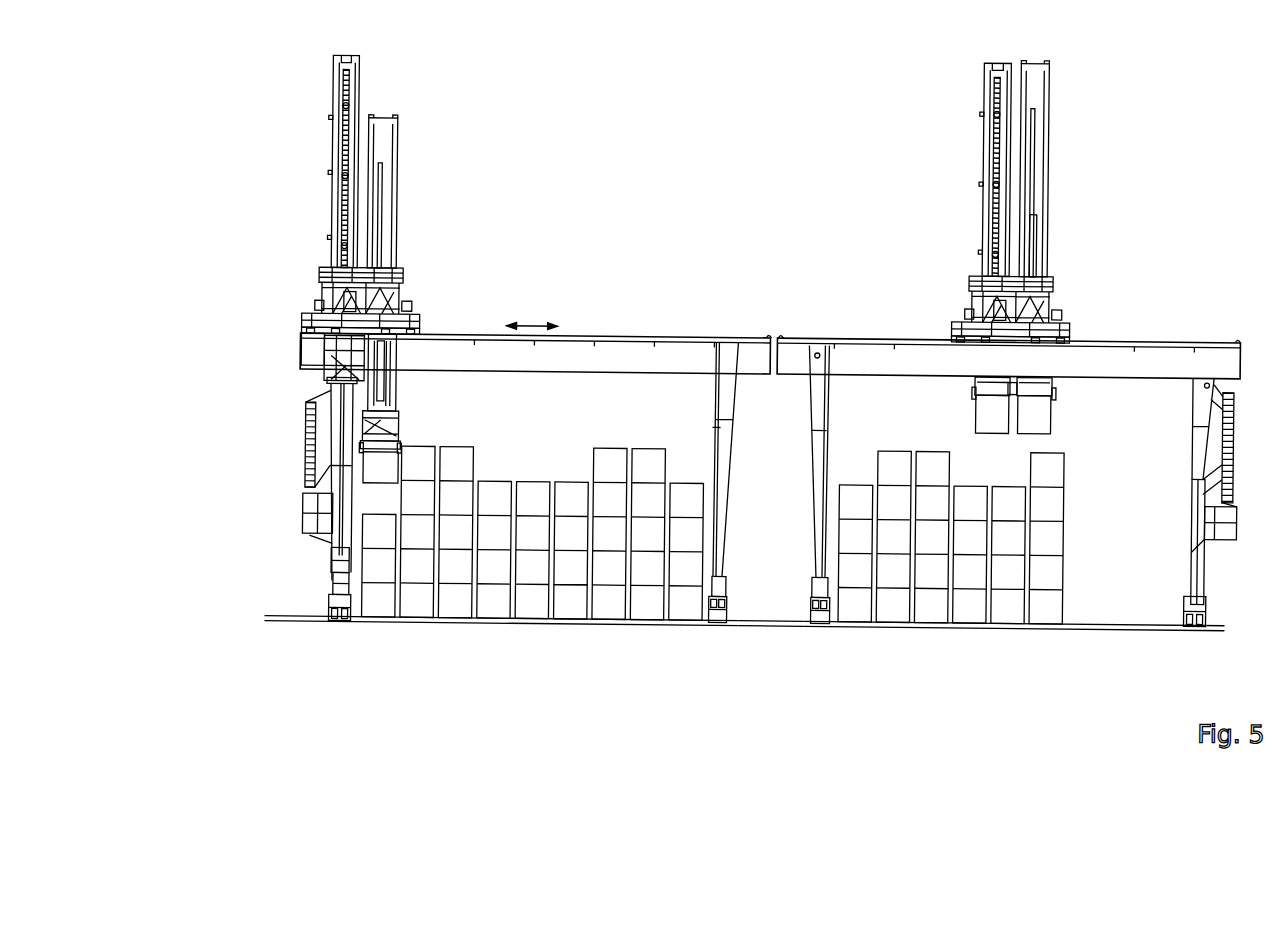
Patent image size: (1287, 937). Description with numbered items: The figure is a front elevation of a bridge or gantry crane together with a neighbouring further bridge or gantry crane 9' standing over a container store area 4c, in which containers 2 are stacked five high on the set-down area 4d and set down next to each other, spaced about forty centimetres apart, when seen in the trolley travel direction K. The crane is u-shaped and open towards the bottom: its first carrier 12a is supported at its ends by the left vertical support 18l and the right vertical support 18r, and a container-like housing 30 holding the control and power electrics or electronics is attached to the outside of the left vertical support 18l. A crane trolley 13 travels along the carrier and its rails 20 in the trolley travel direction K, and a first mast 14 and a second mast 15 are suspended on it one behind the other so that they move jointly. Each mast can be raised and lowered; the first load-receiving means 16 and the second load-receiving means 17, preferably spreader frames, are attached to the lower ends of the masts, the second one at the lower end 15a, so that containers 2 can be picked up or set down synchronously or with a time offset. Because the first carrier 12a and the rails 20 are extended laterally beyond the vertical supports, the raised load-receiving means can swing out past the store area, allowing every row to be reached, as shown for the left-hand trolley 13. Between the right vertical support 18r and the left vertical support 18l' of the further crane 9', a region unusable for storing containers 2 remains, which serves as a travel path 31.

The container 2 is at (573, 604).
The container store area 4c is at (534, 532).
The set-down area 4d is at (612, 622).
The further bridge or gantry crane 9' is at (954, 201).
The first carrier 12a is at (437, 358).
The crane trolley 13 is at (307, 332).
The first mast 14 is at (348, 82).
The second mast 15 is at (385, 194).
The lower end of the second mast 15a is at (377, 401).
The first load-receiving means 16 is at (305, 378).
The second load-receiving means 17 is at (363, 444).
The left vertical support 18l is at (243, 500).
The left vertical support of the further gantry crane 18l' is at (794, 484).
The right vertical support 18r is at (715, 525).
The rails 20 is at (607, 340).
The container-like housing 30 is at (310, 518).
The travel path 31 is at (771, 603).
The trolley travel direction K is at (532, 316).